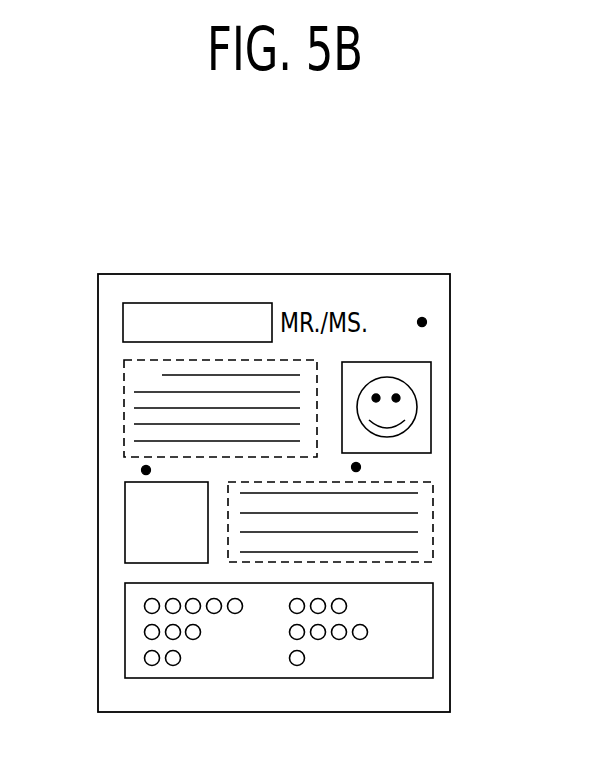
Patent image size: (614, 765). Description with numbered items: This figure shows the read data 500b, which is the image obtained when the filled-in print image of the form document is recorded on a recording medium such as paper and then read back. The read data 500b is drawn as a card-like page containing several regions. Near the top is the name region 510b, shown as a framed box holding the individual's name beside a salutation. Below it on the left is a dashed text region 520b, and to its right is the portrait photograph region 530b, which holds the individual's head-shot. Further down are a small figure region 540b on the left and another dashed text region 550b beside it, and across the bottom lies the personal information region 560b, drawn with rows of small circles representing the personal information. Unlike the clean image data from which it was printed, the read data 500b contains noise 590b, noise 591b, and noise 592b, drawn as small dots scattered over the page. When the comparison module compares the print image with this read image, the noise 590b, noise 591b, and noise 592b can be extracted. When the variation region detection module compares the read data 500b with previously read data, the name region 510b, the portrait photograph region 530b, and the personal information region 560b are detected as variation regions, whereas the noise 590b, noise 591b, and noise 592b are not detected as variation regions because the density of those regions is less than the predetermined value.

The read data 500b is at (451, 303).
The name region 510b is at (123, 318).
The first text region 520b is at (124, 407).
The portrait photograph region 530b is at (431, 407).
The image region 540b is at (125, 521).
The second text region 550b is at (433, 521).
The personal information region 560b is at (433, 632).
The noise 590b is at (422, 318).
The noise 591b is at (360, 466).
The noise 592b is at (142, 470).